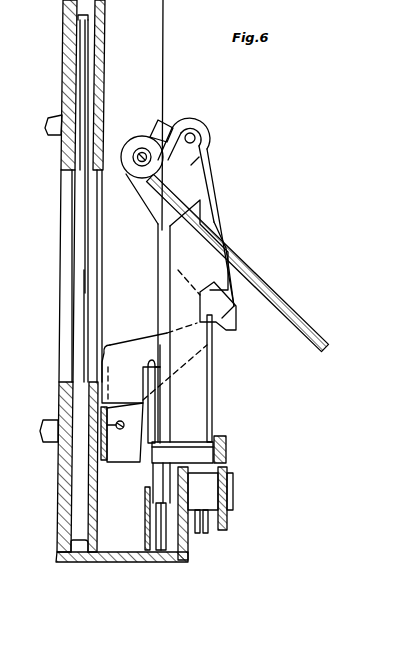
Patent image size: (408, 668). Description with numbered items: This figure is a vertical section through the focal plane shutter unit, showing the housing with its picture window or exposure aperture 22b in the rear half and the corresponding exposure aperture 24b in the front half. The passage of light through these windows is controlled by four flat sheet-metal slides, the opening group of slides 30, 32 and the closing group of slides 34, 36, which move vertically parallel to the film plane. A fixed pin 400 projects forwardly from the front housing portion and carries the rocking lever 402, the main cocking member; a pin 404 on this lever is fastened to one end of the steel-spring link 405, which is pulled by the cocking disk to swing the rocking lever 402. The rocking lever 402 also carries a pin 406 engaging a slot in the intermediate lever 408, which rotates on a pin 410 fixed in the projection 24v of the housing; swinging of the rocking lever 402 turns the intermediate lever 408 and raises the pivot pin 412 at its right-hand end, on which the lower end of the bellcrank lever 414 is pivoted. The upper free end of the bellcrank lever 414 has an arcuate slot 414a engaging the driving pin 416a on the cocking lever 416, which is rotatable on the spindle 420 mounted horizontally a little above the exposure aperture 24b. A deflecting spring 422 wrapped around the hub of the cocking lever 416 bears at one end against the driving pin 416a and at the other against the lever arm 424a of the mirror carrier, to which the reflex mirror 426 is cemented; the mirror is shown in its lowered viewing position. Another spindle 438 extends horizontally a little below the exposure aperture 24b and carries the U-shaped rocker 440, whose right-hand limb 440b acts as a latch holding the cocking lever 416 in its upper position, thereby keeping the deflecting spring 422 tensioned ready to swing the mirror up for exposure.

The picture window or exposure aperture 22b is at (62, 186).
The slide 36 is at (80, 33).
The slide 34 is at (84, 65).
The slide 32 is at (86, 209).
The picture window or exposure aperture 24b is at (97, 240).
The slide 30 is at (85, 300).
The spindle 420 is at (139, 146).
The lever arm 424a is at (166, 112).
The deflecting spring 422 is at (207, 119).
The driving pin 416a is at (195, 137).
The arcuate slot 414a is at (197, 162).
The cocking lever 416 is at (218, 193).
The reflex mirror 426 is at (276, 290).
The bellcrank lever 414 is at (176, 252).
The right hand limb or arm 440b is at (221, 306).
The fixed pin 400 is at (125, 370).
The U-shaped rocker 440 is at (105, 452).
The spindle 438 is at (105, 420).
The pin 406 is at (229, 452).
The pin 410 is at (232, 492).
The pivot pin 412 is at (227, 518).
The intermediate lever 408 is at (220, 532).
The projection 24v is at (183, 523).
The link 405 is at (163, 535).
The rocking lever 402 is at (146, 552).
The pin 404 is at (183, 526).